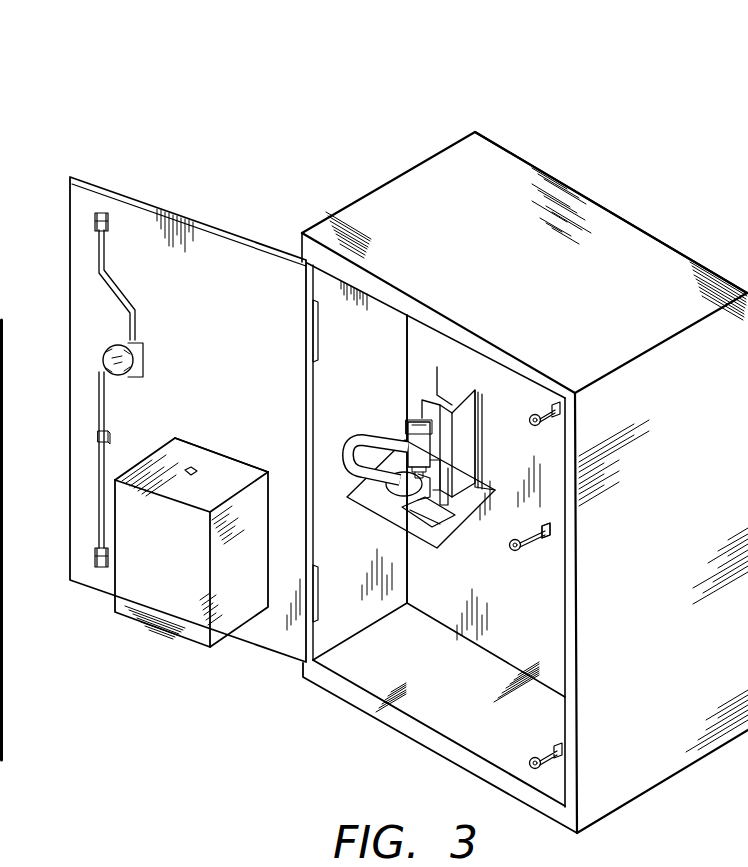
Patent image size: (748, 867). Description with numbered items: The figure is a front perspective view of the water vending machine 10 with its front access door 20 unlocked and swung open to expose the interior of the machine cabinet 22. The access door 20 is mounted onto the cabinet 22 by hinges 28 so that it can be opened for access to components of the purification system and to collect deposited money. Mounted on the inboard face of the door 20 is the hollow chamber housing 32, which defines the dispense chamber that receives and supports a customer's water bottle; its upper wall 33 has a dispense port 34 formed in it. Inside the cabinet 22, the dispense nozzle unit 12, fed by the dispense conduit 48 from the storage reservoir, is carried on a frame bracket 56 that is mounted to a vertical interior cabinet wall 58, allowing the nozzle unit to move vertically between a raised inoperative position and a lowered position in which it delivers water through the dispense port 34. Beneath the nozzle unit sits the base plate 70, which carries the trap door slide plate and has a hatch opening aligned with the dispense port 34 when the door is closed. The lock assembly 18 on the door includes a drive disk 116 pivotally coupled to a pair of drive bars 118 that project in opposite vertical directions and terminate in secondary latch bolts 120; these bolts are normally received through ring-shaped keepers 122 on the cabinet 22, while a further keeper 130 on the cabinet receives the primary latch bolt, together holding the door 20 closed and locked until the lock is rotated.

The water vending machine 10 is at (678, 112).
The dispense nozzle unit 12 is at (423, 390).
The lock assembly 18 is at (178, 364).
The front access door 20 is at (205, 237).
The machine cabinet 22 is at (643, 238).
The hinges 28 is at (315, 610).
The chamber housing 32 is at (162, 617).
The upper wall 33 is at (247, 470).
The dispense port 34 is at (190, 468).
The dispense conduit 48 is at (385, 438).
The frame bracket 56 is at (463, 422).
The interior cabinet wall 58 is at (432, 350).
The base plate 70 is at (448, 533).
The drive disk 116 is at (126, 372).
The drive bars 118 is at (120, 298).
The secondary latch bolts 120 is at (103, 212).
The keepers 122 is at (550, 404).
The keeper 130 is at (548, 530).